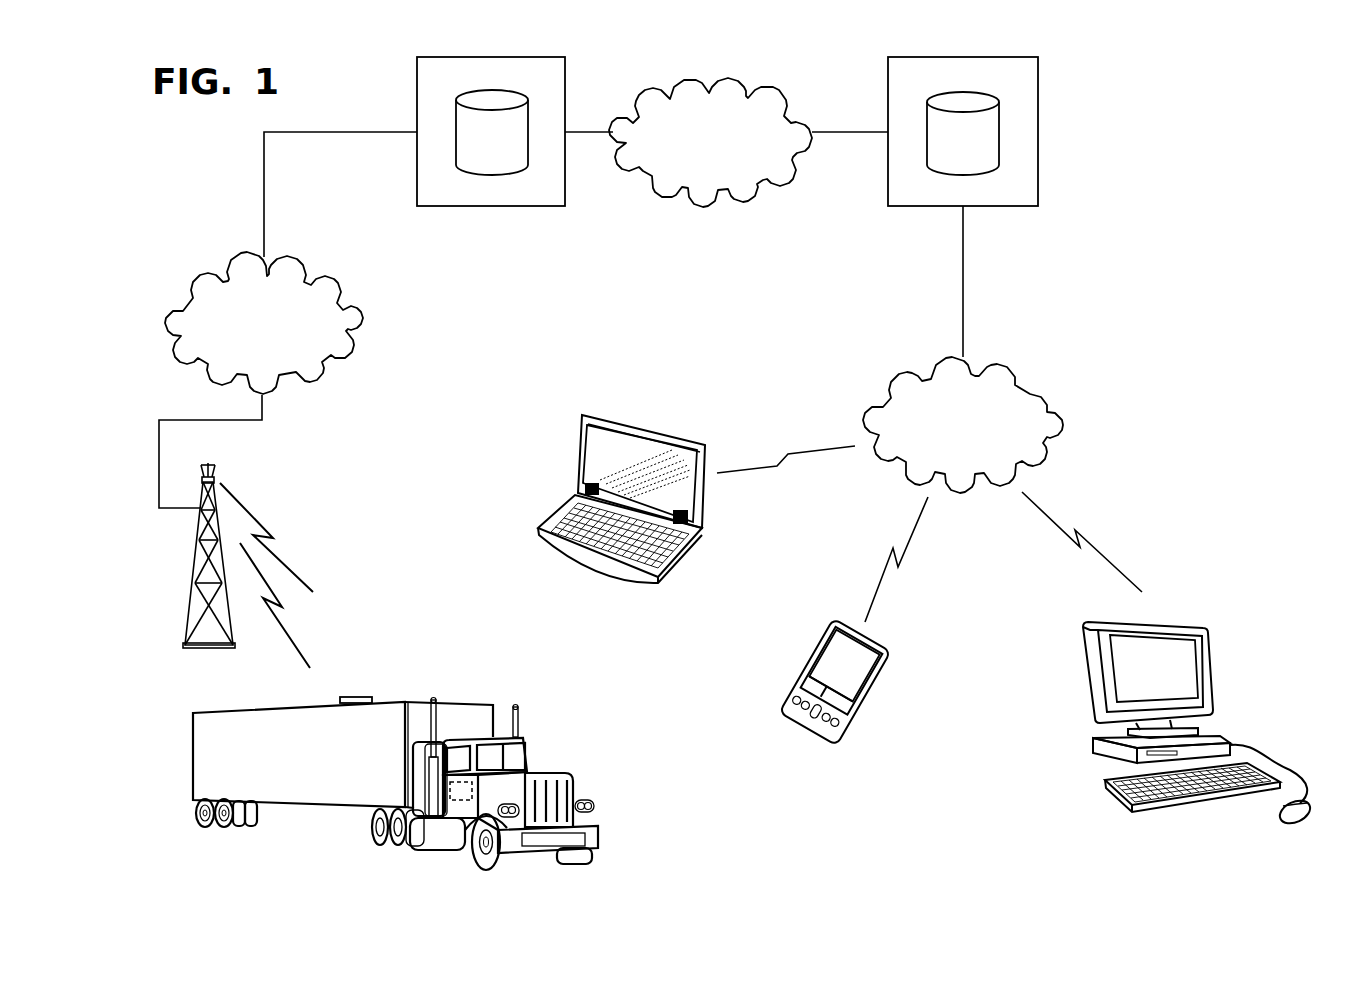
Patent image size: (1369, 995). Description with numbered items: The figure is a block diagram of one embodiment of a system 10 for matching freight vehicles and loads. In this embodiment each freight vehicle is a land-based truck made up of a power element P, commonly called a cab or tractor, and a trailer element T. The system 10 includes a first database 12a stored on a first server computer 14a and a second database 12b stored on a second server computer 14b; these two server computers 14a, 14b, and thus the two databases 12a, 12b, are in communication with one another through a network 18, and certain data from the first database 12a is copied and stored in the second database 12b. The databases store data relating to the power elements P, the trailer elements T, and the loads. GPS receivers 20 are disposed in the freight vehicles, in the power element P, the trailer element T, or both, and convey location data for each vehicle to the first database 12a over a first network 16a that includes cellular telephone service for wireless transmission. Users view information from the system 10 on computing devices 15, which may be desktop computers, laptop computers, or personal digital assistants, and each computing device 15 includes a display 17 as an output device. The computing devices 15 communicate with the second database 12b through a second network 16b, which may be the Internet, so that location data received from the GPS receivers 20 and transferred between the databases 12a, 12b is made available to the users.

The system 10 is at (1186, 240).
The first database 12a is at (467, 145).
The second database 12b is at (990, 145).
The first server computer 14a is at (417, 93).
The second server computer 14b is at (1038, 95).
The computing device 15 is at (552, 518).
The first network 16a is at (340, 323).
The second network 16b is at (988, 377).
The display 17 is at (632, 453).
The network 18 is at (733, 84).
The GPS receiver 20 is at (353, 696).
The trailer element T is at (242, 732).
The power element P is at (482, 733).